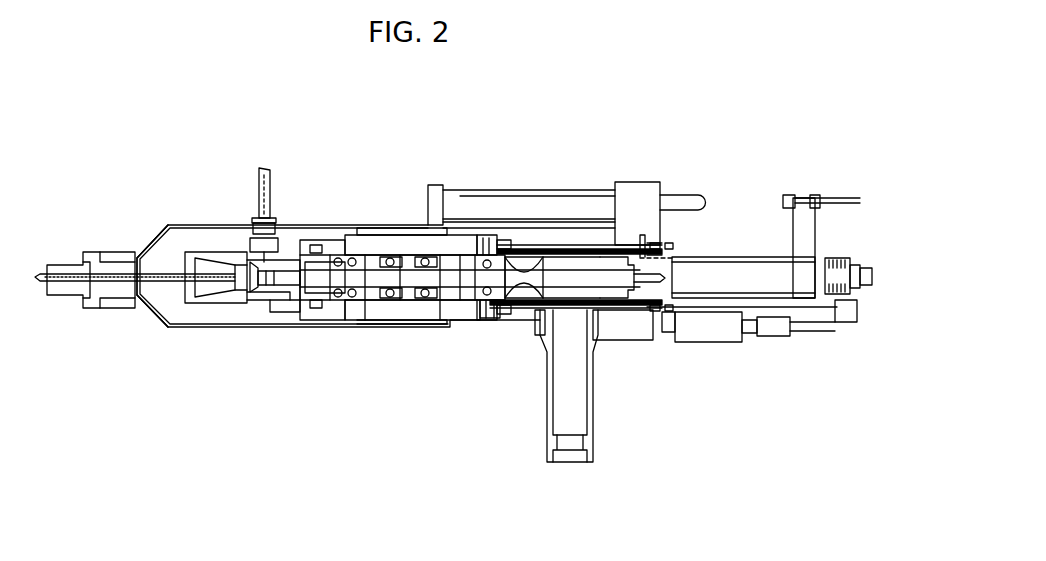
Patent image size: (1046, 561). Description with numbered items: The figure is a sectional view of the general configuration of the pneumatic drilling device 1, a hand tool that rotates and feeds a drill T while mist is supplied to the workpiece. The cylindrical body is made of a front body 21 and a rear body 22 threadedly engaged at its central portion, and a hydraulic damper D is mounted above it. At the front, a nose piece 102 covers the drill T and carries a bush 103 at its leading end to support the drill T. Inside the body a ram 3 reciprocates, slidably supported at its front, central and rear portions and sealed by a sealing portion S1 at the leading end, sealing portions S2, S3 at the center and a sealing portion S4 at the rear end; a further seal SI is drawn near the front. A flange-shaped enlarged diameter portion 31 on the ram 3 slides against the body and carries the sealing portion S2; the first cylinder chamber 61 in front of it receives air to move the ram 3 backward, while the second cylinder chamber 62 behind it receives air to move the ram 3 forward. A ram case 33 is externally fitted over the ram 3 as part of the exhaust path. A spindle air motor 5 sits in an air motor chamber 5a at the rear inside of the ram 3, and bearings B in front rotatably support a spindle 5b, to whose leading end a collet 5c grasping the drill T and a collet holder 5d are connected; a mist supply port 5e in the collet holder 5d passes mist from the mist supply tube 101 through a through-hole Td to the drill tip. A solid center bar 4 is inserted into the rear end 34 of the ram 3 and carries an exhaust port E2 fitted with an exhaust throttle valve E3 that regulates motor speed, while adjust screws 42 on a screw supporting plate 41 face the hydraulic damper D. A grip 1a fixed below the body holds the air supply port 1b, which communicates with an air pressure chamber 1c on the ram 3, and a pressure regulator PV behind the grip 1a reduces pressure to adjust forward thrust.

The pneumatic drilling device 1 is at (681, 124).
The front body 21 is at (330, 228).
The rear body 22 is at (558, 240).
The hydraulic damper D is at (578, 190).
The ram case 33 is at (595, 250).
The center bar 4 is at (722, 257).
The screw supporting plate 41 is at (797, 250).
The adjust screw 42 is at (788, 195).
The exhaust port E2 is at (838, 258).
The exhaust throttle valve E3 is at (862, 270).
The pressure regulator PV is at (705, 345).
The grip 1a is at (595, 405).
The air supply port 1b is at (573, 462).
The air pressure chamber 1c is at (622, 315).
The spindle air motor 5 is at (527, 305).
The air motor chamber 5a is at (605, 260).
The spindle 5b is at (372, 300).
The second cylinder chamber 62 is at (505, 315).
The bearing B is at (340, 300).
The ram 3 is at (372, 240).
The first cylinder chamber 61 is at (405, 318).
The sealing portion S1 is at (318, 245).
The seal SI is at (315, 310).
The enlarged diameter portion 31 is at (472, 243).
The sealing portion S2 is at (487, 245).
The sealing portion S3 is at (519, 246).
The sealing portion S4 is at (665, 248).
The rear end 34 is at (655, 312).
The mist supply tube 101 is at (258, 185).
The mist supply port 5e is at (251, 262).
The nose piece 102 is at (175, 228).
The through-hole Td is at (158, 283).
The bush 103 is at (70, 258).
The drill T is at (63, 290).
The collet 5c is at (215, 290).
The collet holder 5d is at (292, 290).